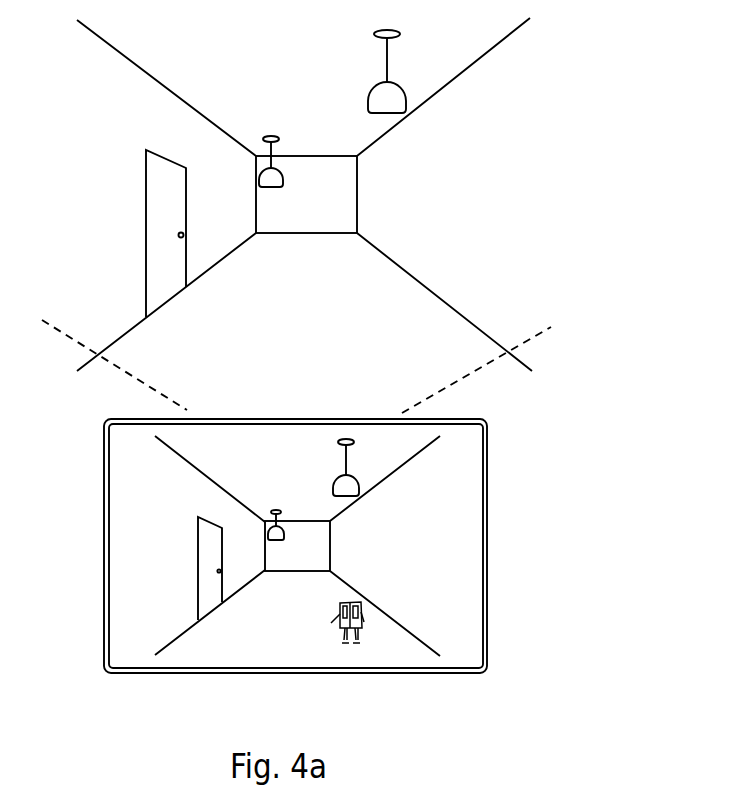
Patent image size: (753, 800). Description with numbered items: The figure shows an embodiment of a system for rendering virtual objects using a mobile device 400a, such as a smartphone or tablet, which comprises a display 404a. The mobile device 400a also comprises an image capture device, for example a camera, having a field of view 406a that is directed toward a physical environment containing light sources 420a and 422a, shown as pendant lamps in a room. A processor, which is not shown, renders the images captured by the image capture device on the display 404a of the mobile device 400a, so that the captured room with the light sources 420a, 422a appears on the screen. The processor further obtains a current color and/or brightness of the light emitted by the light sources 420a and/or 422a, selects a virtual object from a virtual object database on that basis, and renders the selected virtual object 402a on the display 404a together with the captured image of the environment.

The mobile device 400a is at (487, 459).
The virtual object 402a is at (363, 628).
The display 404a is at (450, 592).
The field of view 406a is at (467, 380).
The light source 420a is at (279, 179).
The light source 422a is at (397, 99).